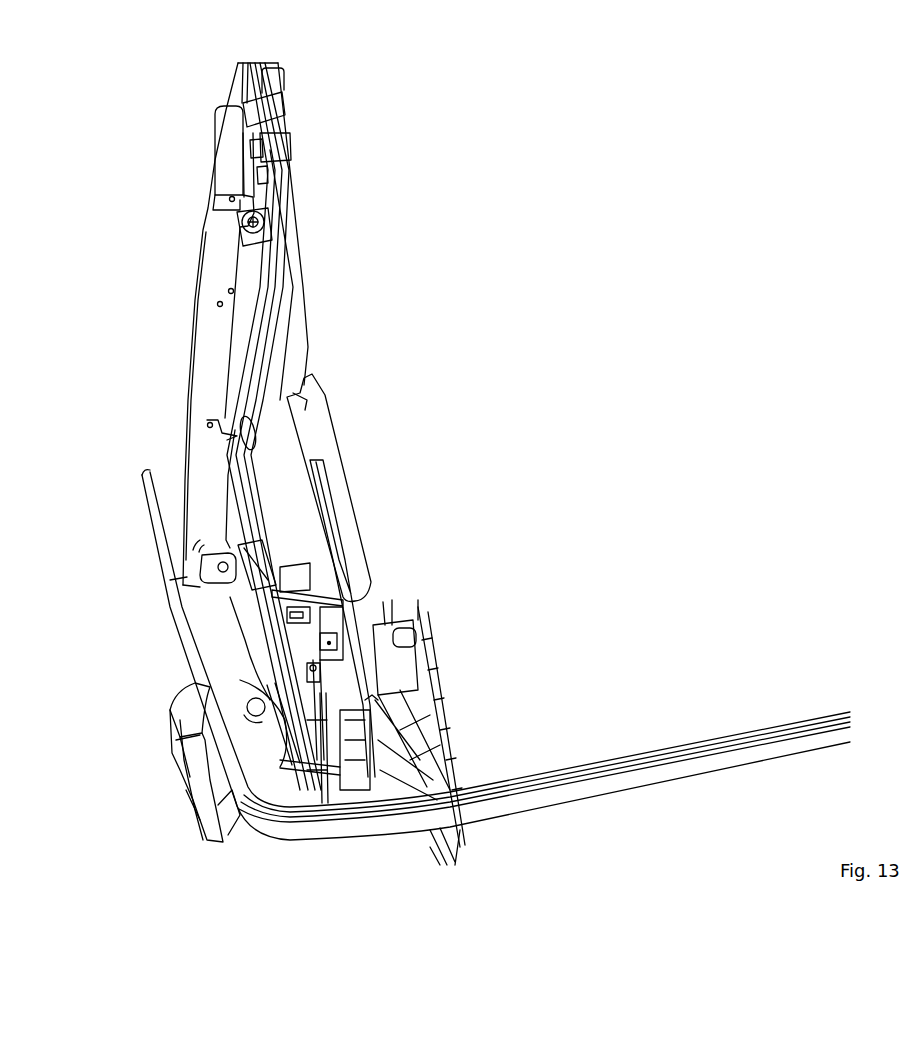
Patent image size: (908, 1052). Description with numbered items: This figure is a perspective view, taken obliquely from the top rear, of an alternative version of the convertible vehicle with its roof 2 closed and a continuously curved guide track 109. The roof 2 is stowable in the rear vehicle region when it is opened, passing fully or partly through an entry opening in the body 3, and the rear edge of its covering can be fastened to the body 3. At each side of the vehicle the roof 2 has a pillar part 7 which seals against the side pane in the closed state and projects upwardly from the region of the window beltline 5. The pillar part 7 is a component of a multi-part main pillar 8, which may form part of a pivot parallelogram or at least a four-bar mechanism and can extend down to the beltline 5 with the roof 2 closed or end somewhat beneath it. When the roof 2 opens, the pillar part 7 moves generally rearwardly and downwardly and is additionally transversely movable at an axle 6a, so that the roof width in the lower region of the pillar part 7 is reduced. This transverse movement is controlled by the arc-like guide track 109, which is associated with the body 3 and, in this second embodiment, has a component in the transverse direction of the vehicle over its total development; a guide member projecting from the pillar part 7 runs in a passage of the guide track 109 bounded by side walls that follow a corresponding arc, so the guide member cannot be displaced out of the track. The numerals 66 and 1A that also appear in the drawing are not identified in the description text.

The roof 2 is at (312, 358).
The body 3 is at (232, 850).
The window beltline 5 is at (176, 598).
The axle 6a is at (220, 213).
The pillar part 7 is at (206, 332).
The main pillar 8 is at (263, 322).
The hook with opening 66 is at (230, 563).
The mounting plate 1A is at (277, 560).
The guide track 109 is at (257, 667).